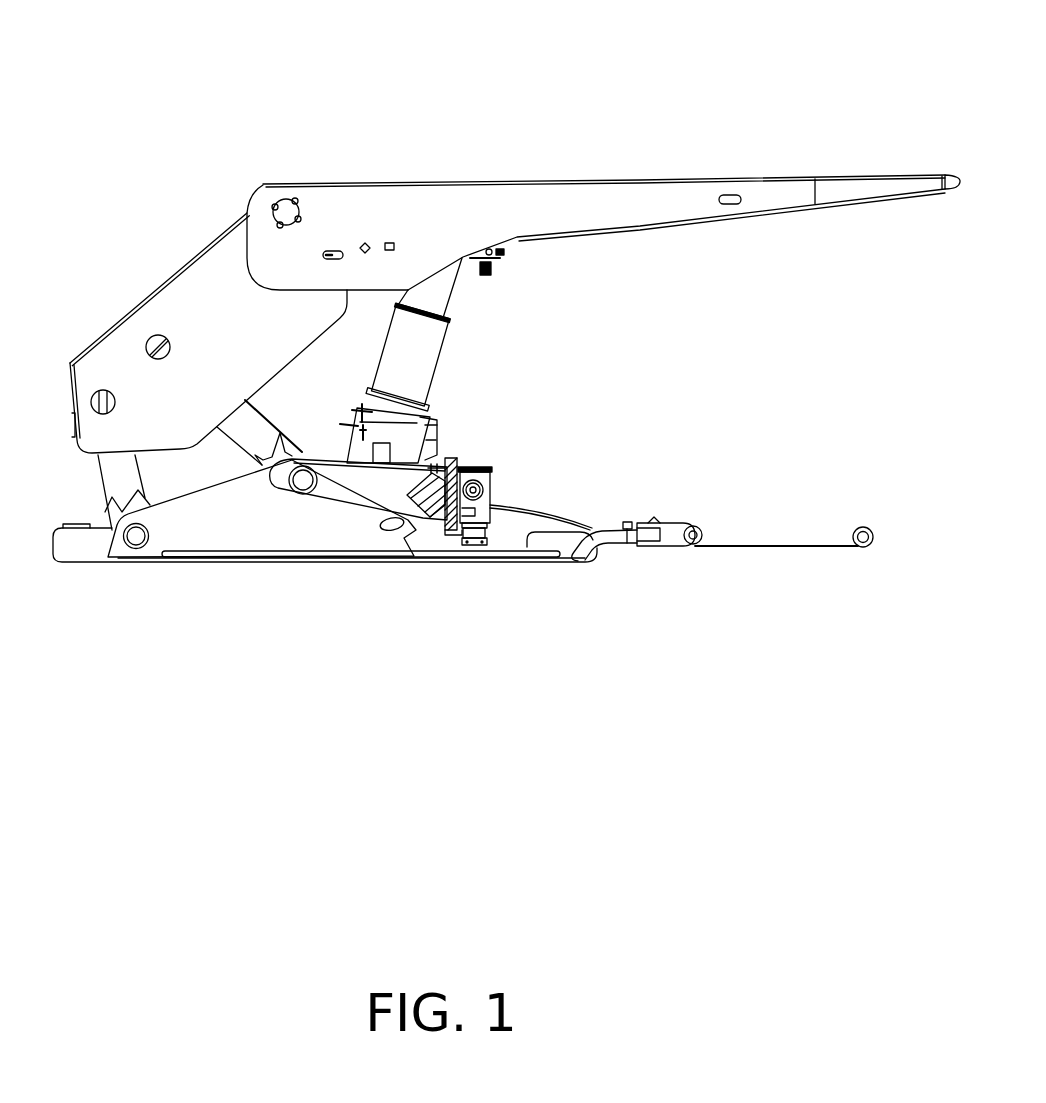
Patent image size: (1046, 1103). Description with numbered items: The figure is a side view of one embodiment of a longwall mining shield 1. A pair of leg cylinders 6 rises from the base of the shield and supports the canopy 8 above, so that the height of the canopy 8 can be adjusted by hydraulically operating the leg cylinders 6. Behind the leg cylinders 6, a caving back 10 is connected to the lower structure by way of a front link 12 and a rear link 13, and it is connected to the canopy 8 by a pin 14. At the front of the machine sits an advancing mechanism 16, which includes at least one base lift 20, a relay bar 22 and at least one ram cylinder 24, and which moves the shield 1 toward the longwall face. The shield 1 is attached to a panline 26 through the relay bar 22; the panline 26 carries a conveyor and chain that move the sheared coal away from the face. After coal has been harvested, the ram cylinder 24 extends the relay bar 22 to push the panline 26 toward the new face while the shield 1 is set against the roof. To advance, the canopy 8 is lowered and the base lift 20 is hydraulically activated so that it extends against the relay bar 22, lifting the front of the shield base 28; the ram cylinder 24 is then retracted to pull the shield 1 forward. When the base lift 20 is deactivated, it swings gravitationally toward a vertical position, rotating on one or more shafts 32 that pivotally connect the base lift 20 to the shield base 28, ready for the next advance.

The longwall mining shield 1 is at (214, 64).
The leg cylinders 6 is at (435, 371).
The canopy 8 is at (662, 180).
The caving back 10 is at (173, 270).
The front link 12 is at (93, 488).
The rear link 13 is at (268, 417).
The pin 14 is at (286, 198).
The advancing mechanism 16 is at (493, 500).
The base lift 20 is at (474, 466).
The relay bar 22 is at (672, 548).
The ram cylinder 24 is at (68, 565).
The panline 26 is at (778, 545).
The shield base 28 is at (245, 565).
The shafts 32 is at (484, 487).